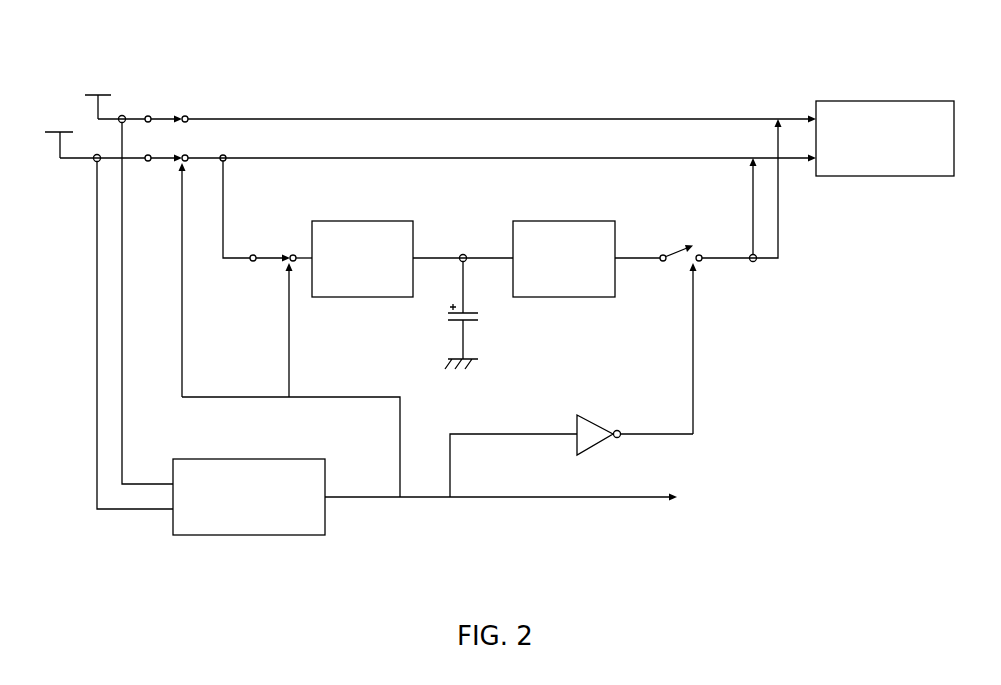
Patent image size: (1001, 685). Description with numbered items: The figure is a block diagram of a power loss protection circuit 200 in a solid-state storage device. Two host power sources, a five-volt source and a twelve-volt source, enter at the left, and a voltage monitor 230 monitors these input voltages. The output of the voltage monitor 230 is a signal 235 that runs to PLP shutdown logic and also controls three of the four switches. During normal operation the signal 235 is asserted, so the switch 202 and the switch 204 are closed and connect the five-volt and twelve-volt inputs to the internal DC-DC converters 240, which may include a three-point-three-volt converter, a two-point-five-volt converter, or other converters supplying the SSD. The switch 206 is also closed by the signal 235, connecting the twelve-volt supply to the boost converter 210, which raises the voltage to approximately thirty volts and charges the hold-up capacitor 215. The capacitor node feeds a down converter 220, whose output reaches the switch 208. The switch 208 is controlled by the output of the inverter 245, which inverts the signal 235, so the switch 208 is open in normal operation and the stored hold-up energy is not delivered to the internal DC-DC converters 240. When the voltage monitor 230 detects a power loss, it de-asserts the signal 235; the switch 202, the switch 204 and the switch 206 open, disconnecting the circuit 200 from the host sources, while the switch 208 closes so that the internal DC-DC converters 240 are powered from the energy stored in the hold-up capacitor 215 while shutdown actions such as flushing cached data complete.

The power loss protection circuit 200 is at (89, 26).
The switch 202 is at (162, 118).
The switch 204 is at (162, 157).
The switch 206 is at (268, 256).
The switch 208 is at (684, 250).
The boost converter 210 is at (351, 286).
The hold-up capacitor 215 is at (467, 316).
The down converter 220 is at (552, 286).
The voltage monitor 230 is at (238, 524).
The signal 235 is at (345, 497).
The internal DC-DC converters 240 is at (874, 166).
The inverter 245 is at (591, 424).